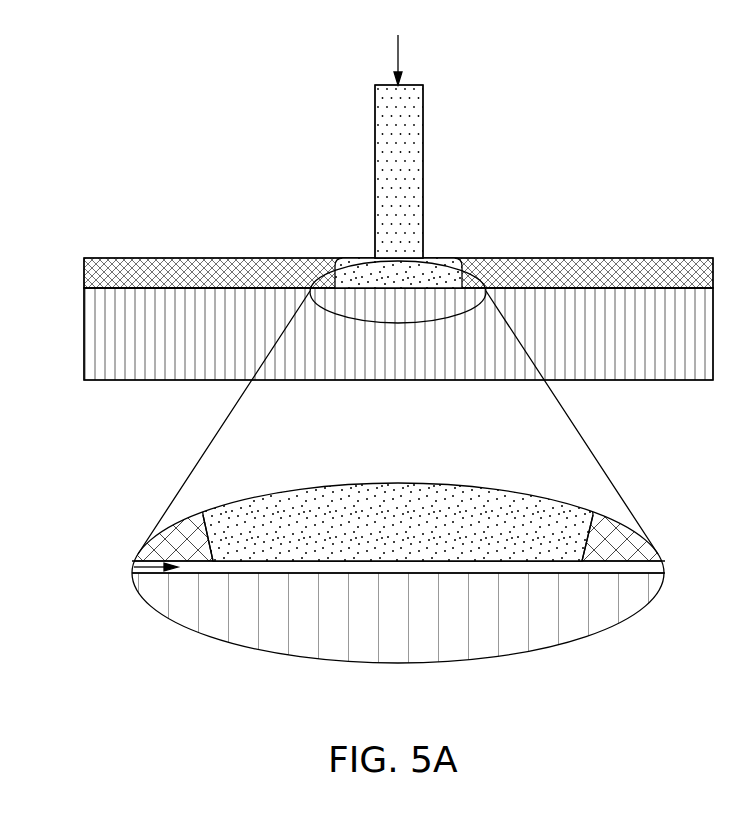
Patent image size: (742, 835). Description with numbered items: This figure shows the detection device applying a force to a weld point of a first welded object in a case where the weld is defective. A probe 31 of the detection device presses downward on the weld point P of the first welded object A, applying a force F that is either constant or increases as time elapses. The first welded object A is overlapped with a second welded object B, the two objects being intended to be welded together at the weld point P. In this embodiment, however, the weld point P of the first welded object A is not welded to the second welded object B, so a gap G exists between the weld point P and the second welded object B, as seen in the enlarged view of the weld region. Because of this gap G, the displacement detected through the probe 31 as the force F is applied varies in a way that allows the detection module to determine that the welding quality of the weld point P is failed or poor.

The probe 31 is at (400, 125).
The force F is at (400, 53).
The first welded object A is at (106, 273).
The second welded object B is at (106, 309).
The weld point P is at (437, 282).
The gap G is at (134, 567).